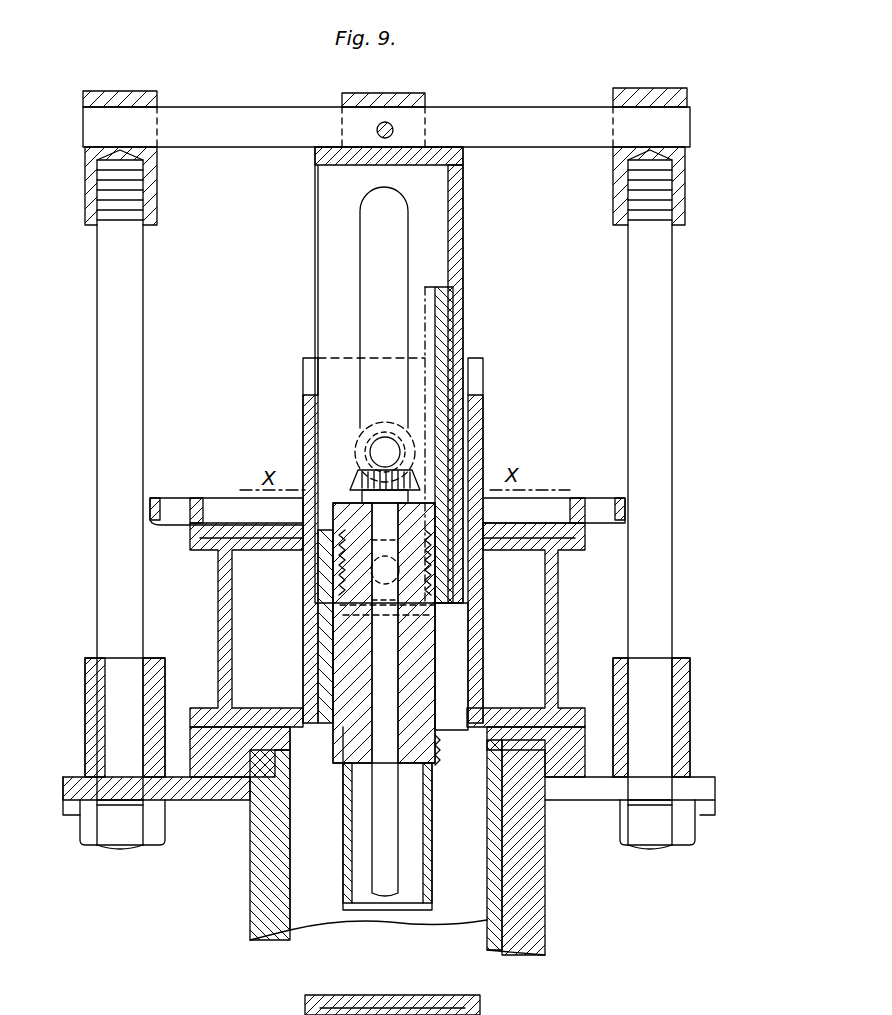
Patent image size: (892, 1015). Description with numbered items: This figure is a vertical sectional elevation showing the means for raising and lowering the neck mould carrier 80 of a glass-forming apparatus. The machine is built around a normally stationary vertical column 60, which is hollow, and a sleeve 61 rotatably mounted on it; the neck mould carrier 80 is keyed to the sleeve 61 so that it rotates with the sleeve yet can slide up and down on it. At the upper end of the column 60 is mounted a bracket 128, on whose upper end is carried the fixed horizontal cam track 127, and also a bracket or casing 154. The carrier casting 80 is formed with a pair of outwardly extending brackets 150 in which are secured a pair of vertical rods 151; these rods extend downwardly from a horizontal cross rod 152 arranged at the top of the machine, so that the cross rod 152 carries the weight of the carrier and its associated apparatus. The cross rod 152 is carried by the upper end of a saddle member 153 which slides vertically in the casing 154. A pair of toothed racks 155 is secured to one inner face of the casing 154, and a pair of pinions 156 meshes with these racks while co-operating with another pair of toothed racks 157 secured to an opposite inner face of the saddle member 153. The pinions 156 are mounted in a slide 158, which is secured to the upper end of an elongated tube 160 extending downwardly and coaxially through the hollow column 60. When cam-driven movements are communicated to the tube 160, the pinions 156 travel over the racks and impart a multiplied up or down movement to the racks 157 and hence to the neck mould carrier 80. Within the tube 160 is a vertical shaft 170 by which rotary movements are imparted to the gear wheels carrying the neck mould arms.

The stationary vertical column 60 is at (285, 912).
The sleeve 61 is at (280, 905).
The neck mould carrier 80 is at (232, 875).
The cam track 127 is at (170, 497).
The bracket 128 is at (222, 637).
The brackets 150 is at (105, 830).
The vertical rods 151 is at (130, 383).
The horizontal cross rod 152 is at (270, 140).
The saddle member 153 is at (462, 222).
The casing 154 is at (483, 425).
The toothed racks 155 is at (333, 662).
The pinions 156 is at (445, 620).
The toothed racks 157 is at (432, 330).
The slide 158 is at (425, 738).
The elongated tube 160 is at (428, 895).
The vertical shaft 170 is at (385, 800).